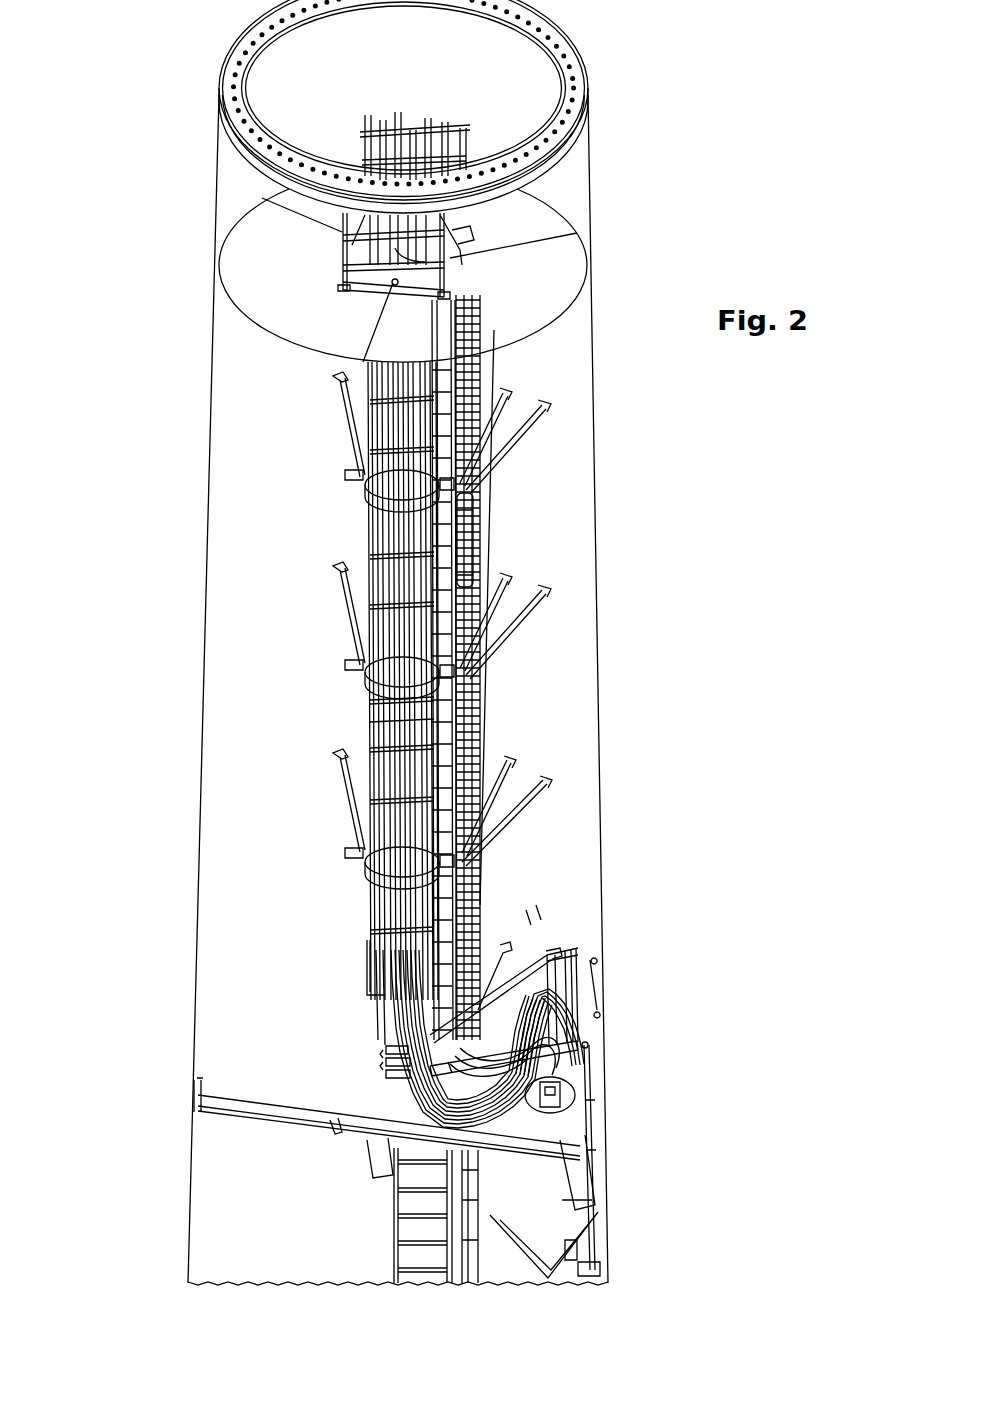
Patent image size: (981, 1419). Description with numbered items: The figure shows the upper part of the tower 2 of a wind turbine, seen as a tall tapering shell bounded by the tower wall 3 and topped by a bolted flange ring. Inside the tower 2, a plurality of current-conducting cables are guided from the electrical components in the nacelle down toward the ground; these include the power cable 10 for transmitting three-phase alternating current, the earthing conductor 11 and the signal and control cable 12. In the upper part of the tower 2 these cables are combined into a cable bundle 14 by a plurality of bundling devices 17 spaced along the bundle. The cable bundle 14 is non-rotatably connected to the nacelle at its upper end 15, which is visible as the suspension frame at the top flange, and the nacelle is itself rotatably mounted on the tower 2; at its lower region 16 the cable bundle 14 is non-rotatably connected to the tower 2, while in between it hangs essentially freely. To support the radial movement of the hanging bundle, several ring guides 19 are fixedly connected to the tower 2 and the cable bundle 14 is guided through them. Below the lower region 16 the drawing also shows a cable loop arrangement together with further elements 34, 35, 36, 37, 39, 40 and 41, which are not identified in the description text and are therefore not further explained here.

The tower 2 is at (158, 1150).
The tower wall 3 is at (218, 796).
The power cable 10 is at (374, 553).
The earthing conductor 11 is at (374, 512).
The cable 12 is at (376, 461).
The cable bundle 14 is at (372, 912).
The end 15 is at (378, 128).
The lower region 16 is at (376, 1020).
The bundling device 17 is at (374, 720).
The ring guide 19 is at (374, 686).
The cable loop device 34 is at (535, 927).
The circular holder 35 is at (574, 1079).
The lower support 36 is at (518, 1113).
The cable clamps 37 is at (376, 1062).
The vertical rod 39 is at (592, 1168).
The diagonal arm 40 is at (573, 1057).
The frame post 41 is at (566, 975).